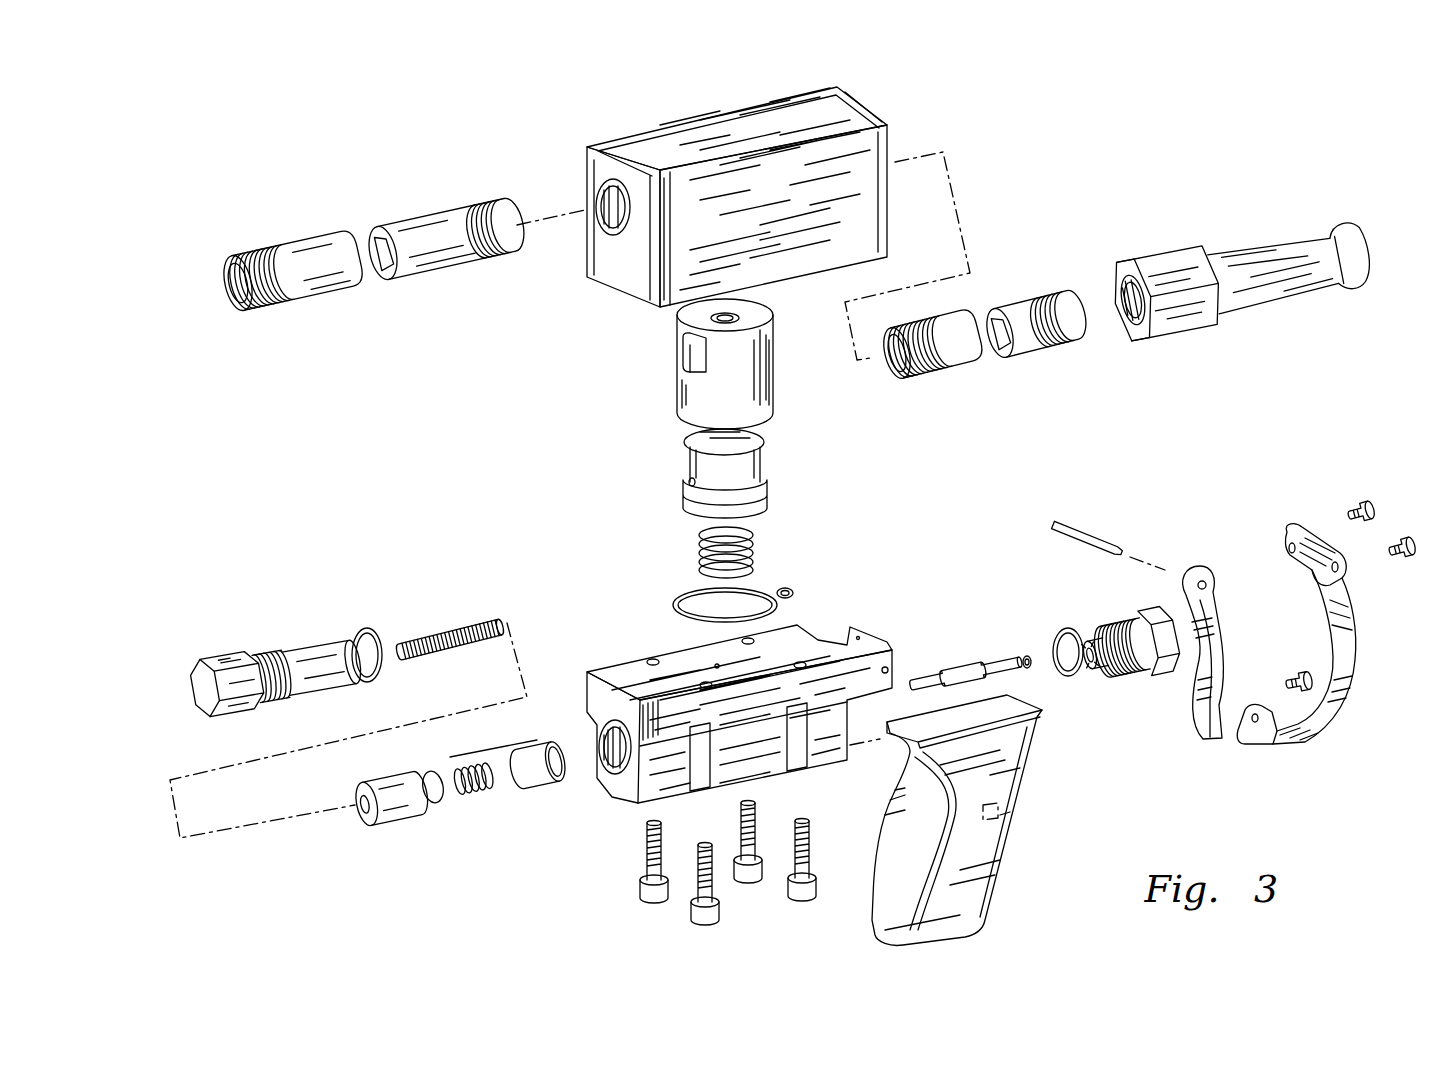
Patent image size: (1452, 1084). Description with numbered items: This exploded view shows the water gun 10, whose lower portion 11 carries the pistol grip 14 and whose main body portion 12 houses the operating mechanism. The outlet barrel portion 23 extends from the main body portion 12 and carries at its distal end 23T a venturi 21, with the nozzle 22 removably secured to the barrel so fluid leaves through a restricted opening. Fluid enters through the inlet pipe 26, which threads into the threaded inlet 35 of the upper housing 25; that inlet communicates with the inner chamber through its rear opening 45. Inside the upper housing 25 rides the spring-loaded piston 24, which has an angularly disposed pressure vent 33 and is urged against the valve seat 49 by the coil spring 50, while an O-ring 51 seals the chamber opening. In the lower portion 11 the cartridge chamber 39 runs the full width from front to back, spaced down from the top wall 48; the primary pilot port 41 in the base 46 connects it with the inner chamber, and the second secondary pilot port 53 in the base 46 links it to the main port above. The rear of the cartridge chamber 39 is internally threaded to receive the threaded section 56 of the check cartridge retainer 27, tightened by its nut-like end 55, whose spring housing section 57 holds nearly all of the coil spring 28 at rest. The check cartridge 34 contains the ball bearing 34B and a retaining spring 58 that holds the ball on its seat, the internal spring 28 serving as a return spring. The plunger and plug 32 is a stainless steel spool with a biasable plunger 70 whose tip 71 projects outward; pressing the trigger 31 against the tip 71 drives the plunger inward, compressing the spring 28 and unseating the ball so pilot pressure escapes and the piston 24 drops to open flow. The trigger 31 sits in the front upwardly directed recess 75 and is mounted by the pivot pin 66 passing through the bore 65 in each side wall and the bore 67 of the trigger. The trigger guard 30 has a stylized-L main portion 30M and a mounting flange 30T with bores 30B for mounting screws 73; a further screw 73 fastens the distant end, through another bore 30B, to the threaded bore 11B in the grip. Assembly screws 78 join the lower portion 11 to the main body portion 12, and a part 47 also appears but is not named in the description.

The water gun 10 is at (420, 397).
The lower portion 11 is at (1008, 837).
The threaded bore 11B is at (1000, 815).
The main body portion 12 is at (994, 204).
The pistol grip 14 is at (905, 820).
The venturi 21 is at (1360, 275).
The nozzle 22 is at (1232, 250).
The outlet barrel portion 23 is at (1027, 352).
The distal end 23T is at (1125, 330).
The piston 24 is at (757, 466).
The upper housing 25 is at (635, 133).
The inlet pipe 26 is at (405, 228).
The check cartridge retainer 27 is at (226, 652).
The coil spring 28 is at (468, 630).
The trigger guard 30 is at (1357, 668).
The bores 30B is at (1340, 565).
The main portion 30M is at (1362, 652).
The mounting flange 30T is at (1312, 540).
The trigger 31 is at (1215, 642).
The plunger and plug 32 is at (1118, 655).
The pressure vent 33 is at (690, 482).
The check cartridge 34 is at (445, 751).
The ball bearing 34B is at (435, 805).
The threaded inlet 35 is at (605, 224).
The cartridge chamber 39 is at (602, 746).
The primary pilot port 41 is at (787, 650).
The rear opening 45 is at (680, 342).
The base 46 is at (605, 697).
The cap 47 is at (600, 780).
The top wall 48 is at (616, 672).
The valve seat 49 is at (755, 310).
The coil spring 50 is at (757, 549).
The O-ring 51 is at (690, 597).
The second secondary pilot port 53 is at (715, 665).
The nut-like end 55 is at (212, 700).
The threaded section 56 is at (275, 703).
The spring housing section 57 is at (315, 680).
The retaining spring 58 is at (480, 798).
The bore 65 is at (887, 667).
The pivot pin 66 is at (1098, 528).
The bore 67 is at (1207, 582).
The plunger 70 is at (962, 672).
The tip 71 is at (1020, 655).
The mounting screws 73 is at (1403, 540).
The recess 75 is at (858, 636).
The assembly screws 78 is at (790, 905).